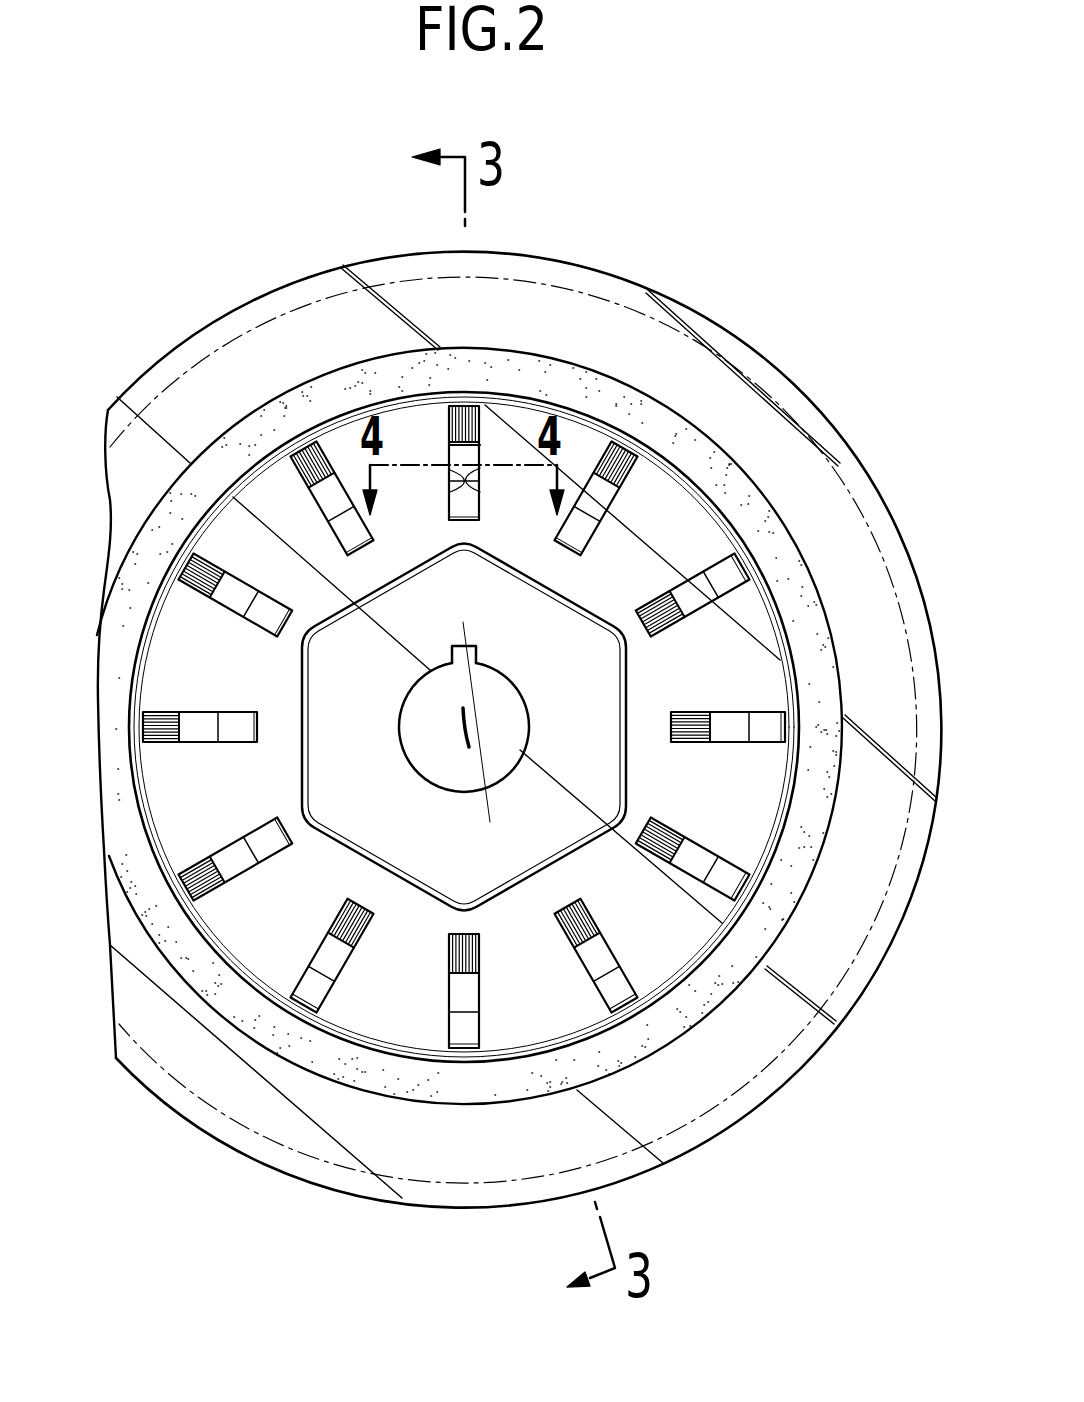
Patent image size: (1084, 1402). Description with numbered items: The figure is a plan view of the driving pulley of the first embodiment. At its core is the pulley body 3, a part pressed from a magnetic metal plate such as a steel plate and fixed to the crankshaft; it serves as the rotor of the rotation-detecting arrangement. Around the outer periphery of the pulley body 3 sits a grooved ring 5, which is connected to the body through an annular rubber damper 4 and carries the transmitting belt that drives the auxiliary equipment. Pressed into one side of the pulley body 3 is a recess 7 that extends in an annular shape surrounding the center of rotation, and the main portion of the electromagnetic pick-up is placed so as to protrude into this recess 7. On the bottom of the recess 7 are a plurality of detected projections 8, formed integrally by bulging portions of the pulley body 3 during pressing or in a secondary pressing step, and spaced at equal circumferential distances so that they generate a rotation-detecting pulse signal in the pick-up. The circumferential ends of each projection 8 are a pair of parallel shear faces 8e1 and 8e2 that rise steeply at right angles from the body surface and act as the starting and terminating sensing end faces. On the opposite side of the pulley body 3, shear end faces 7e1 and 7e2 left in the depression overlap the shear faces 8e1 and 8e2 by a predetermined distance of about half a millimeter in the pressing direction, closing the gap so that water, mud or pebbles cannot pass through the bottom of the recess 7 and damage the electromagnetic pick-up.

The pulley body 3 is at (778, 597).
The annular rubber damper 4 is at (598, 386).
The grooved ring 5 is at (723, 338).
The recess 7 is at (482, 702).
The shear end face 7e1 is at (476, 476).
The shear end face 7e2 is at (457, 478).
The detected projections 8 is at (465, 398).
The shear face 8e1 is at (481, 445).
The shear face 8e2 is at (449, 445).